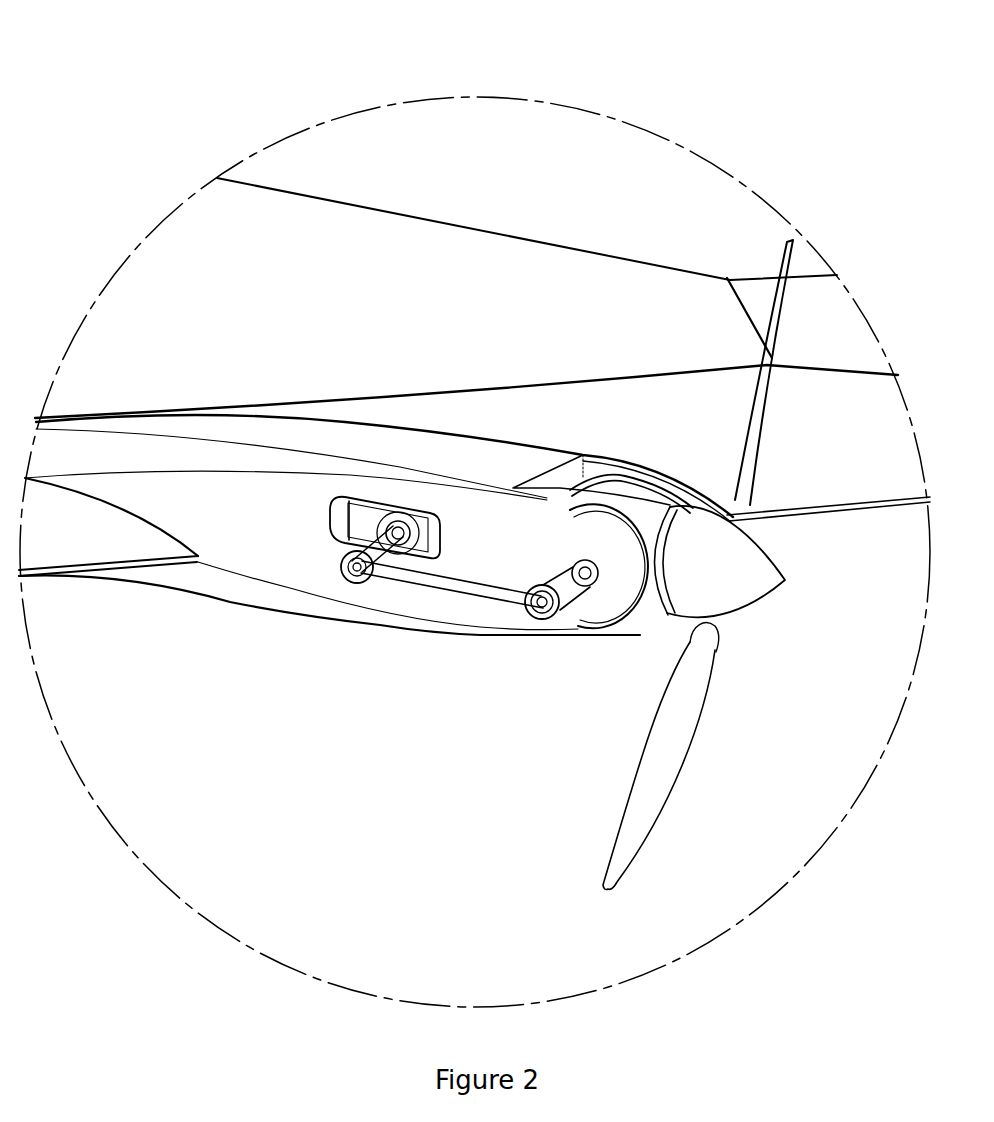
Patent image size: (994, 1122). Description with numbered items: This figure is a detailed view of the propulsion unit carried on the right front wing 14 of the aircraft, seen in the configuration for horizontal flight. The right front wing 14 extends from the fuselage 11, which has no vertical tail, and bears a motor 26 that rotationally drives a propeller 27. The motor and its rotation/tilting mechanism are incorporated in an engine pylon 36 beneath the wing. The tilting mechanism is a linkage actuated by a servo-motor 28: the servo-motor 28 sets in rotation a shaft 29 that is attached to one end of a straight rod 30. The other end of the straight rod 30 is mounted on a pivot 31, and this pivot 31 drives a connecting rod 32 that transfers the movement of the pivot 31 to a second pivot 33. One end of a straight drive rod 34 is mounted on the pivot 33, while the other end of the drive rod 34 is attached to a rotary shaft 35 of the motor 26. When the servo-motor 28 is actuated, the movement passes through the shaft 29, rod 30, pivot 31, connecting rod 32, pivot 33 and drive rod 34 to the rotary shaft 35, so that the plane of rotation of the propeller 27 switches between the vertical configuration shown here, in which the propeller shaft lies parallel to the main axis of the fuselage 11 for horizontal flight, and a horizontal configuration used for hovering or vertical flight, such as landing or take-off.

The fuselage 11 is at (420, 120).
The right front wing 14 is at (553, 398).
The motor 26 is at (610, 497).
The propeller 27 is at (687, 697).
The servo-motor 28 is at (363, 520).
The shaft 29 is at (398, 521).
The straight rod 30 is at (388, 548).
The pivot 31 is at (355, 583).
The connecting rod 32 is at (466, 585).
The pivot 33 is at (543, 619).
The straight drive rod 34 is at (572, 597).
The rotary shaft 35 is at (588, 560).
The engine pylon 36 is at (188, 575).